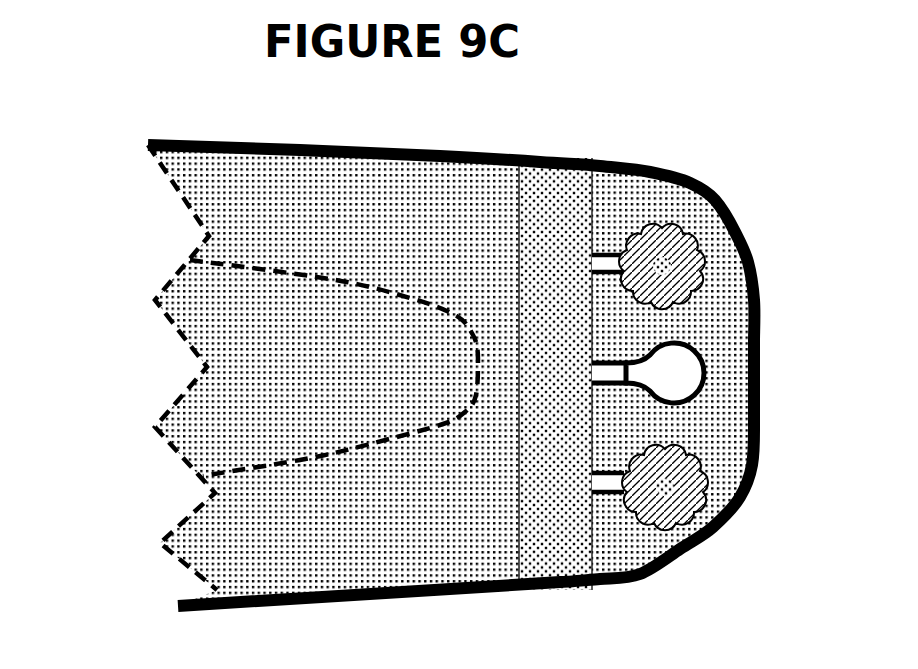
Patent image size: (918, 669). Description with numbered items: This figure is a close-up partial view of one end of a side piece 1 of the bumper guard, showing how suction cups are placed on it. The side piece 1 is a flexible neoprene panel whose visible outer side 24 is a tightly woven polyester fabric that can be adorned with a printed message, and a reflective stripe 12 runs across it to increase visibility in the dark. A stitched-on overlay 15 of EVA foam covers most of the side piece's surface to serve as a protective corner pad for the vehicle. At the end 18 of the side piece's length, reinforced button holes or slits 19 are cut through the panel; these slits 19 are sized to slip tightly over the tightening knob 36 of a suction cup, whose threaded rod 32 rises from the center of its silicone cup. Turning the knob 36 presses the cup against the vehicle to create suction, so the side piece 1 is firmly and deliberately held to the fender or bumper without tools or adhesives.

The side piece 1 is at (225, 128).
The reflective stripe 12 is at (543, 212).
The EVA foam overlay 15 is at (267, 368).
The end of side piece length 18 is at (762, 373).
The button hole or reinforced slit 19 is at (603, 263).
The outer side of side piece 24 is at (418, 232).
The threaded rod 32 is at (667, 262).
The tightening knob 36 is at (693, 248).